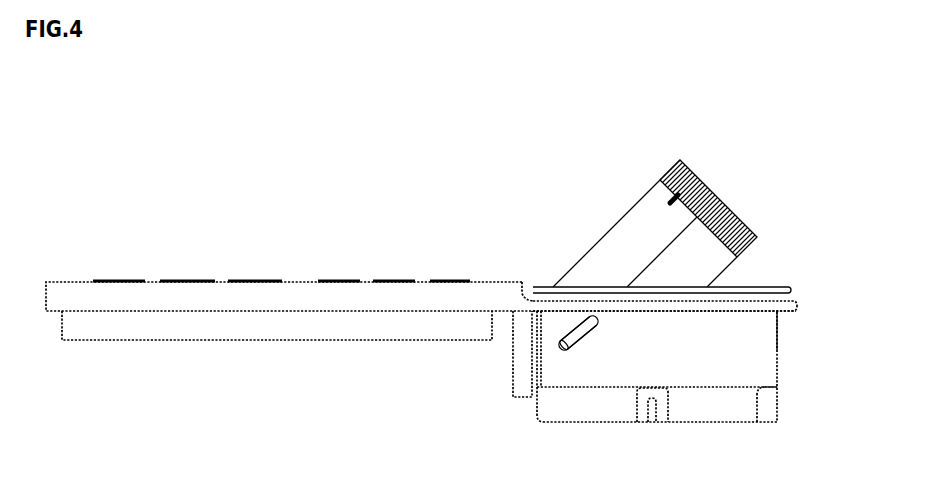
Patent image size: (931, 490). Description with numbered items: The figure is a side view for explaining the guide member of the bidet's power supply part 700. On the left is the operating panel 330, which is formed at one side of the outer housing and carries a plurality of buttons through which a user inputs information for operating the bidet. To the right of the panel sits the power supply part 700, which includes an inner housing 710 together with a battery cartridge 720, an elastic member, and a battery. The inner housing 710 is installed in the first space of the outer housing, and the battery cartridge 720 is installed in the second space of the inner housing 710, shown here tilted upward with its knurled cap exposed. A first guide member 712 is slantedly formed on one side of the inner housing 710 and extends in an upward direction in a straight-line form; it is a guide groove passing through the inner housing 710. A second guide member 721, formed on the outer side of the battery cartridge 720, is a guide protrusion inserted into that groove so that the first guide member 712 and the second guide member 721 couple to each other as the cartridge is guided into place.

The operating panel 330 is at (365, 288).
The power supply part 700 is at (679, 277).
The inner housing 710 is at (766, 357).
The first guide member 712 is at (577, 316).
The battery cartridge 720 is at (604, 246).
The second guide member 721 is at (570, 352).